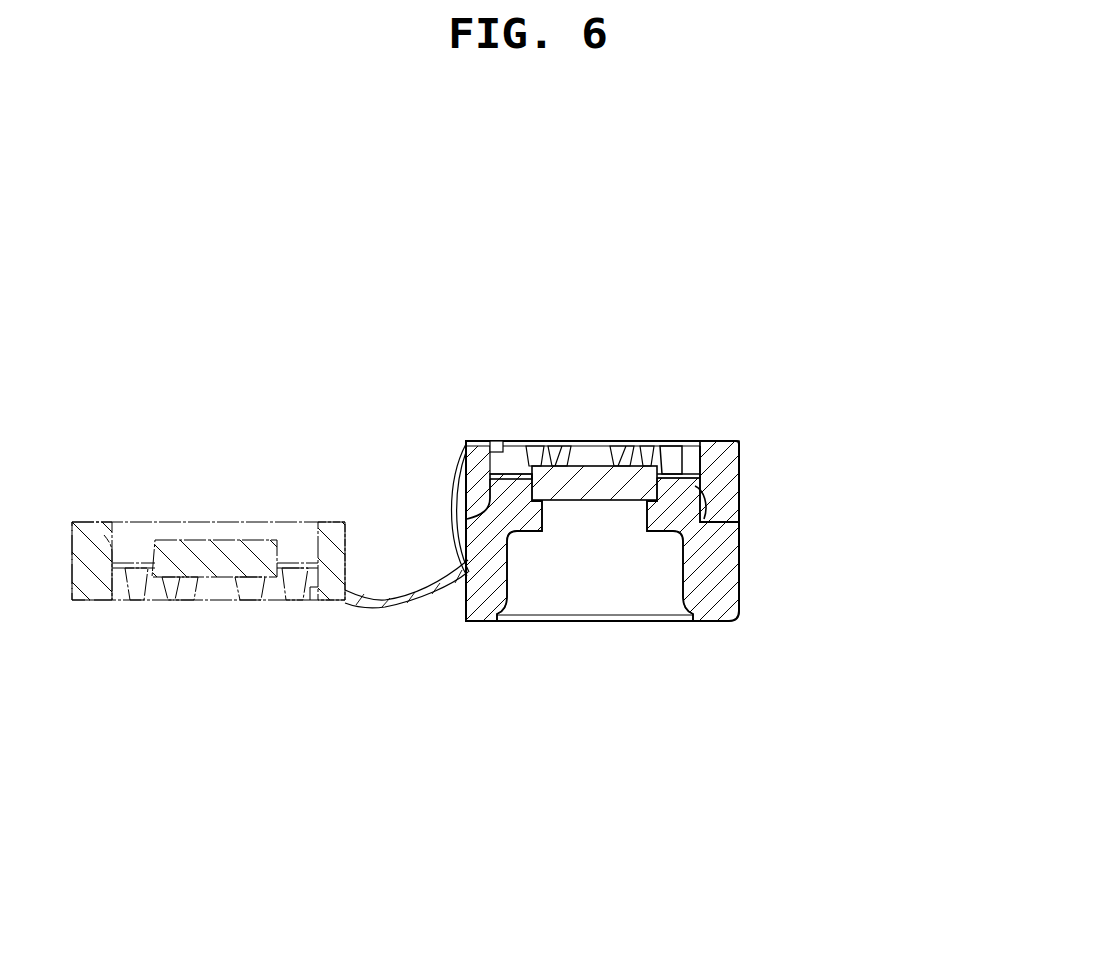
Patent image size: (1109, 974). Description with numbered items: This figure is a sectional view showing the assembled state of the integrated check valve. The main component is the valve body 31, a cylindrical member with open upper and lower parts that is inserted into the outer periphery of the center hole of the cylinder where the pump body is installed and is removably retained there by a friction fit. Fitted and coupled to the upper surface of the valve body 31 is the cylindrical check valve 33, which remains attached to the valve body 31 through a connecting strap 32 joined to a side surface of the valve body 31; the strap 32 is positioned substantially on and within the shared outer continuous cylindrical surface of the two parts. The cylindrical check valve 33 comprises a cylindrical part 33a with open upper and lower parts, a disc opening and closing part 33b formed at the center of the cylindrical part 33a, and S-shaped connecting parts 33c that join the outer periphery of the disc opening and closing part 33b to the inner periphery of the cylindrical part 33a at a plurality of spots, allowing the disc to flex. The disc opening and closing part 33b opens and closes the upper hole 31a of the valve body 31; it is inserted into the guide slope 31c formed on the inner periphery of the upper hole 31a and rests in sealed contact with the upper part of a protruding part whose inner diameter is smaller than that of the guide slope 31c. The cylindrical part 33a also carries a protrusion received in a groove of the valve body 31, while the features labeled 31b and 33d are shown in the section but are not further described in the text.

The valve body 31 is at (473, 610).
The upper hole 31a is at (653, 520).
The stepped portion of housing 31b is at (707, 510).
The guide slope 31c is at (466, 462).
The connecting strap 32 is at (453, 490).
The cylindrical check valve 33 is at (660, 346).
The cylindrical part 33a is at (727, 473).
The disc opening and closing part 33b is at (600, 466).
The S-shaped connecting parts 33c is at (594, 371).
The terminal opening 33d is at (323, 537).